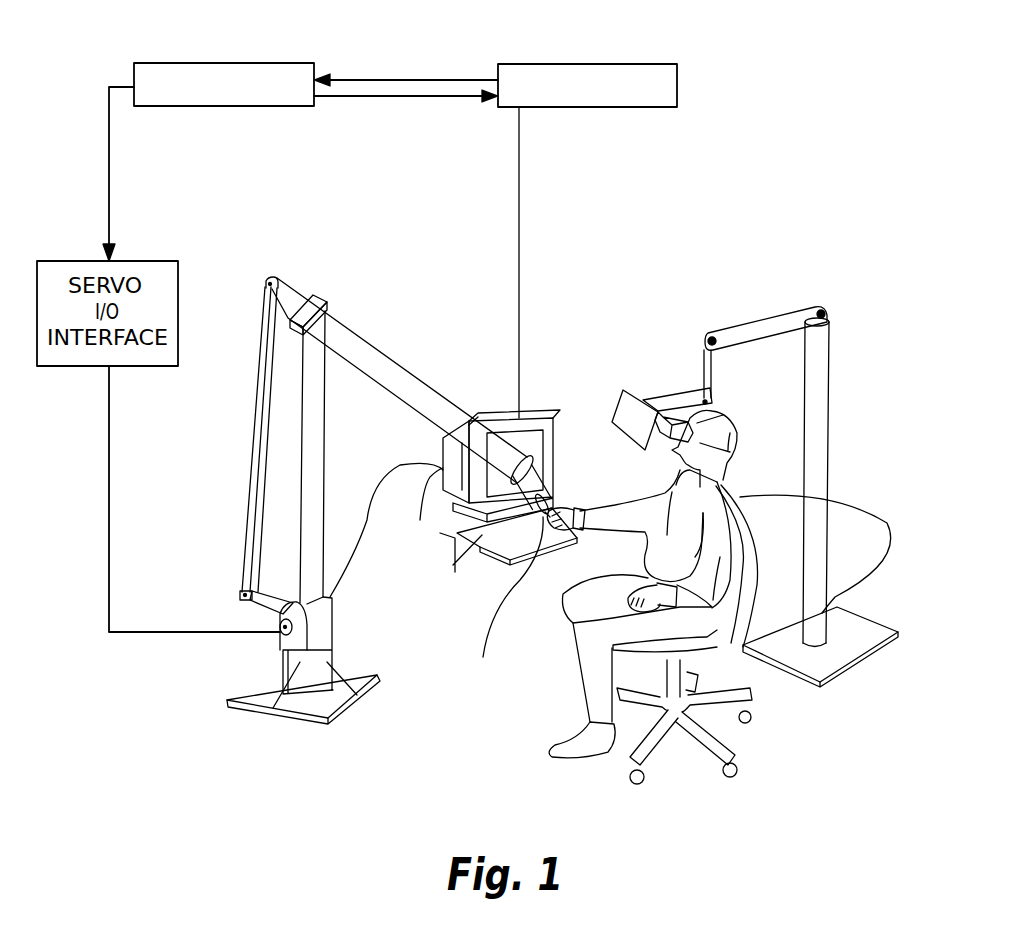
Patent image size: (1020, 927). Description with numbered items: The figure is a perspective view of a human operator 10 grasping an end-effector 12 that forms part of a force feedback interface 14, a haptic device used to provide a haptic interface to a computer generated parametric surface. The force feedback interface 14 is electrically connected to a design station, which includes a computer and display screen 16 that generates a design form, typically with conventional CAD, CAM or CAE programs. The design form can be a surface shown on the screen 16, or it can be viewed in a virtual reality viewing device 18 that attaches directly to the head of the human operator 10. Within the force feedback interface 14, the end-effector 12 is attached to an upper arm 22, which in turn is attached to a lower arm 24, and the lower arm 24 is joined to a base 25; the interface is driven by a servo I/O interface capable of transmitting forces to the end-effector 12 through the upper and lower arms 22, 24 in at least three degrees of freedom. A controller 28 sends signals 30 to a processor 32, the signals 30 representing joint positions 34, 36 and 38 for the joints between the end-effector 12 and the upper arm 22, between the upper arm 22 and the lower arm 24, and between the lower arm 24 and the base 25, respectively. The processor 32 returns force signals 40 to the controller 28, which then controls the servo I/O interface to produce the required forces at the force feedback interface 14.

The human operator 10 is at (727, 650).
The end-effector 12 is at (551, 511).
The force feedback interface 14 is at (212, 586).
The computer and display screen 16 is at (500, 417).
The virtual reality viewing device 18 is at (637, 413).
The upper arm 22 is at (365, 338).
The lower arm 24 is at (327, 482).
The base 25 is at (357, 702).
The controller 28 is at (170, 63).
The signals 30 is at (352, 96).
The processor 32 is at (608, 64).
The joint position 34 is at (506, 603).
The joint position 36 is at (317, 297).
The joint position 38 is at (280, 645).
The force signals 40 is at (447, 80).